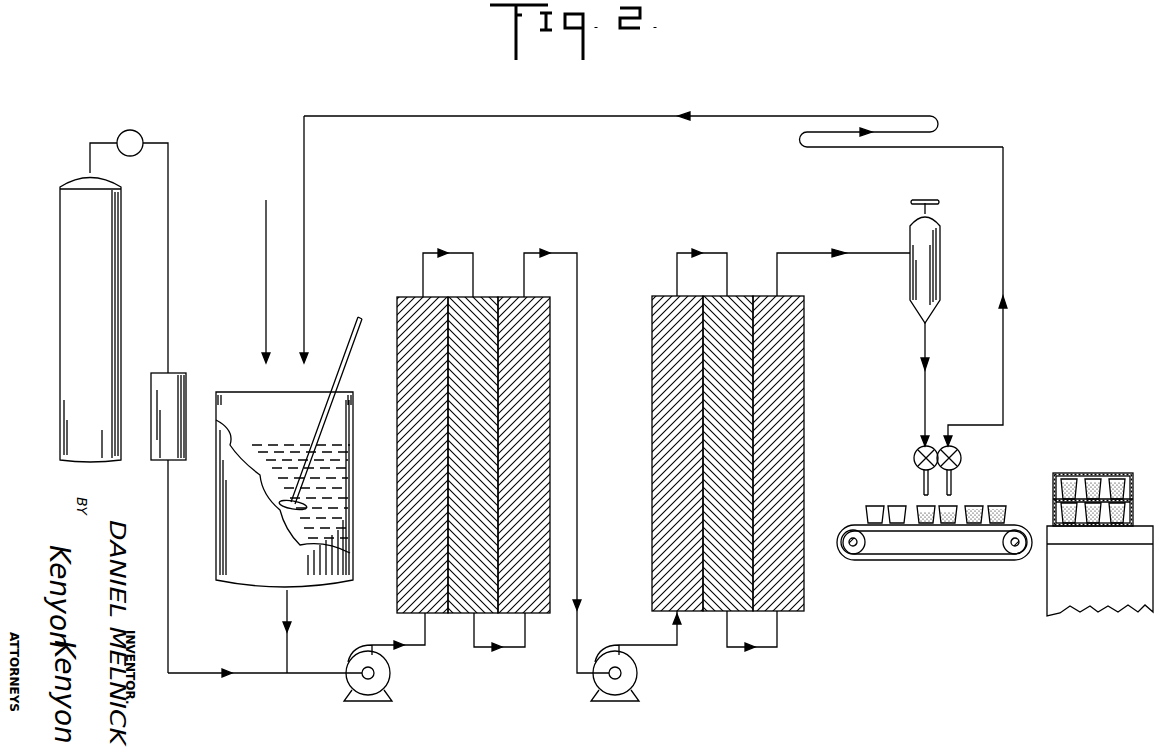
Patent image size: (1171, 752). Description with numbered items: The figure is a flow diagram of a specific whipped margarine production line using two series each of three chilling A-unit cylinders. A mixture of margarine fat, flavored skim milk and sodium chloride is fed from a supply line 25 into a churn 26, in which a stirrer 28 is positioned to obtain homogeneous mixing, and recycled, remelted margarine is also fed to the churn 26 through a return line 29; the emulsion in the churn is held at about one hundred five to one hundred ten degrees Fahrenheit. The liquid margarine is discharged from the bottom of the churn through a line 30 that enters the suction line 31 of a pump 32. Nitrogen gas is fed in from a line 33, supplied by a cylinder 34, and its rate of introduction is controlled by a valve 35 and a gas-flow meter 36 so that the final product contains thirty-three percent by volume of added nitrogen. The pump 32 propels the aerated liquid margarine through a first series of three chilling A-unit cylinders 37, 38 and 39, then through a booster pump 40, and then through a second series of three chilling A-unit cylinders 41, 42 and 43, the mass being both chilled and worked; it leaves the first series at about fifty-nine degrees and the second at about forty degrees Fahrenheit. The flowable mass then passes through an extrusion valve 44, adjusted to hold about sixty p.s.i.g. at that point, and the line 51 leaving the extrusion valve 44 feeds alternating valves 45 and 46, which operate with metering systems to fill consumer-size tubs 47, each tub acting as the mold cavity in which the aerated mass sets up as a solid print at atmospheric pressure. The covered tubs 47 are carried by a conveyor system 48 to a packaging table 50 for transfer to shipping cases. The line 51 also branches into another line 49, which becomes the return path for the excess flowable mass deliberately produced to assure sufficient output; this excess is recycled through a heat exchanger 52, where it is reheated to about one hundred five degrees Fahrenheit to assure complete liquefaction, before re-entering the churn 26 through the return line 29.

The supply line 25 is at (266, 243).
The churn 26 is at (216, 531).
The stirrer 28 is at (354, 332).
The return line 29 is at (304, 174).
The line 30 is at (288, 650).
The suction line 31 is at (306, 676).
The pump 32 is at (386, 680).
The line 33 is at (244, 676).
The cylinder 34 is at (60, 385).
The valve 35 is at (143, 138).
The gas-flow meter 36 is at (158, 457).
The chilling A-unit cylinder 37 is at (412, 297).
The chilling A-unit cylinder 38 is at (483, 298).
The chilling A-unit cylinder 39 is at (536, 299).
The booster pump 40 is at (634, 680).
The chilling A-unit cylinder 41 is at (662, 296).
The chilling A-unit cylinder 42 is at (736, 297).
The chilling A-unit cylinder 43 is at (796, 298).
The extrusion valve 44 is at (942, 252).
The alternating valve 45 is at (914, 458).
The alternating valve 46 is at (961, 458).
The consumer-size tub 47 is at (866, 516).
The conveyor system 48 is at (905, 561).
The line 49 is at (1003, 352).
The packaging table 50 is at (1047, 600).
The line 51 is at (926, 352).
The heat exchanger 52 is at (940, 126).